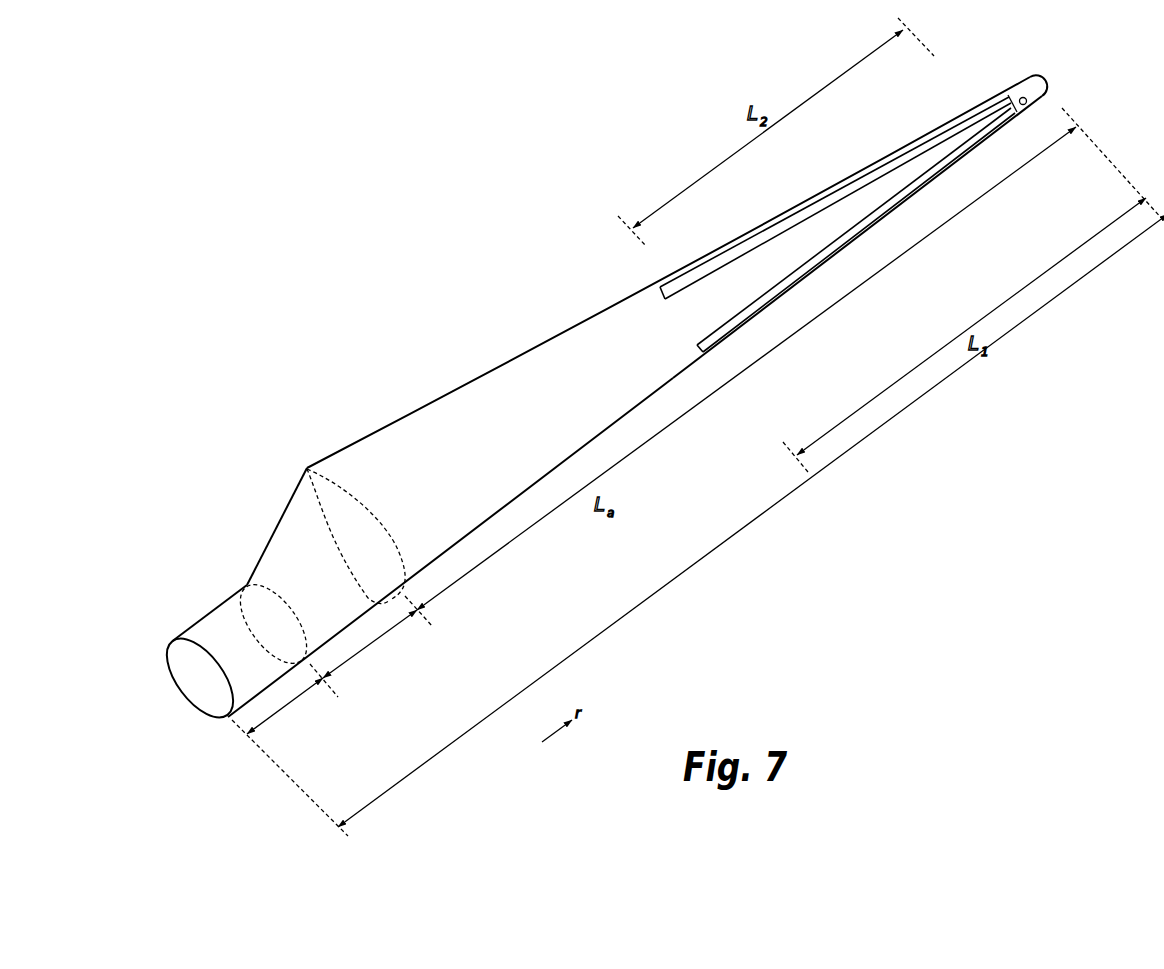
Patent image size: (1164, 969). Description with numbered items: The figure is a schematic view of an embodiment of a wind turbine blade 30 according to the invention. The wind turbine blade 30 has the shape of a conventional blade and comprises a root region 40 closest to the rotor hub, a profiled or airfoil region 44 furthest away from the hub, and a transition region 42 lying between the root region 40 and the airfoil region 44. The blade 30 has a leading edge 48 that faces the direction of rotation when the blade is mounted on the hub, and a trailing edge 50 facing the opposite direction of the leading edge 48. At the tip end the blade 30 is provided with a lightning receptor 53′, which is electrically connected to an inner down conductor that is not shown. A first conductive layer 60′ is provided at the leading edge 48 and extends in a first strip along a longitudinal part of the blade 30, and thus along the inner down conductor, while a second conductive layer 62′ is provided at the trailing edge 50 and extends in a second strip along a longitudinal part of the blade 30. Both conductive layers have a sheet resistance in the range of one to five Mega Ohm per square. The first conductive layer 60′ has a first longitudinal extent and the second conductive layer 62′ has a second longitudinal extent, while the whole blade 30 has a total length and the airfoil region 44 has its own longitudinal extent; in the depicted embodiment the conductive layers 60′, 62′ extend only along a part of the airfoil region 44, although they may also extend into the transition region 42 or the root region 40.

The wind turbine blade 30 is at (600, 394).
The root region 40 is at (283, 707).
The transition region 42 is at (370, 643).
The airfoil region 44 is at (682, 417).
The leading edge 48 is at (778, 303).
The trailing edge 50 is at (783, 215).
The lightning receptor 53′ is at (1017, 98).
The first conductive layer 60′ is at (863, 230).
The second conductive layer 62′ is at (733, 259).